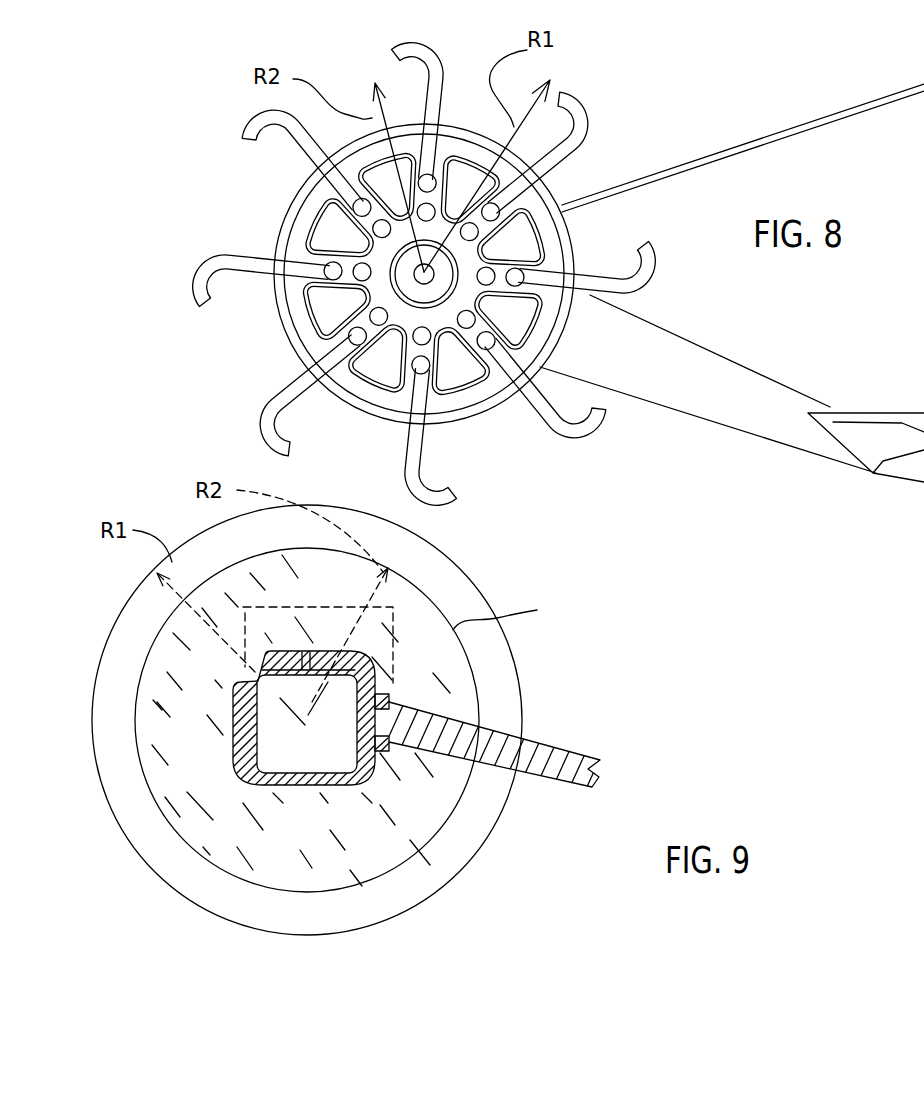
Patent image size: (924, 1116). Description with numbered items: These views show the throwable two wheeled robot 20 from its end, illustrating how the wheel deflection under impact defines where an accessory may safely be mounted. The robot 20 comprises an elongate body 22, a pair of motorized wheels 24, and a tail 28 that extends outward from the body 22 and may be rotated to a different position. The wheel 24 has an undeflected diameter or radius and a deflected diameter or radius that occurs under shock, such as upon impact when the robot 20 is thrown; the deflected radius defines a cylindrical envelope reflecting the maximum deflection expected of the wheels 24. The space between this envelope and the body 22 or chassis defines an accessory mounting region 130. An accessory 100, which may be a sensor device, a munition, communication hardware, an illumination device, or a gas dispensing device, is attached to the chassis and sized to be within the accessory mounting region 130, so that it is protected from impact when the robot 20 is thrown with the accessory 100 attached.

In FIG. 8, the throwable two wheeled robot 20 is at (743, 148).
In FIG. 9, the elongate body 22 is at (234, 768).
In FIG. 8, the motorized wheel 24 is at (567, 427).
In FIG. 8, the tail 28 is at (713, 372).
In FIG. 9, the tail 28 is at (560, 752).
In FIG. 9, the accessory 100 is at (406, 627).
In FIG. 9, the accessory mounting region 130 is at (218, 772).